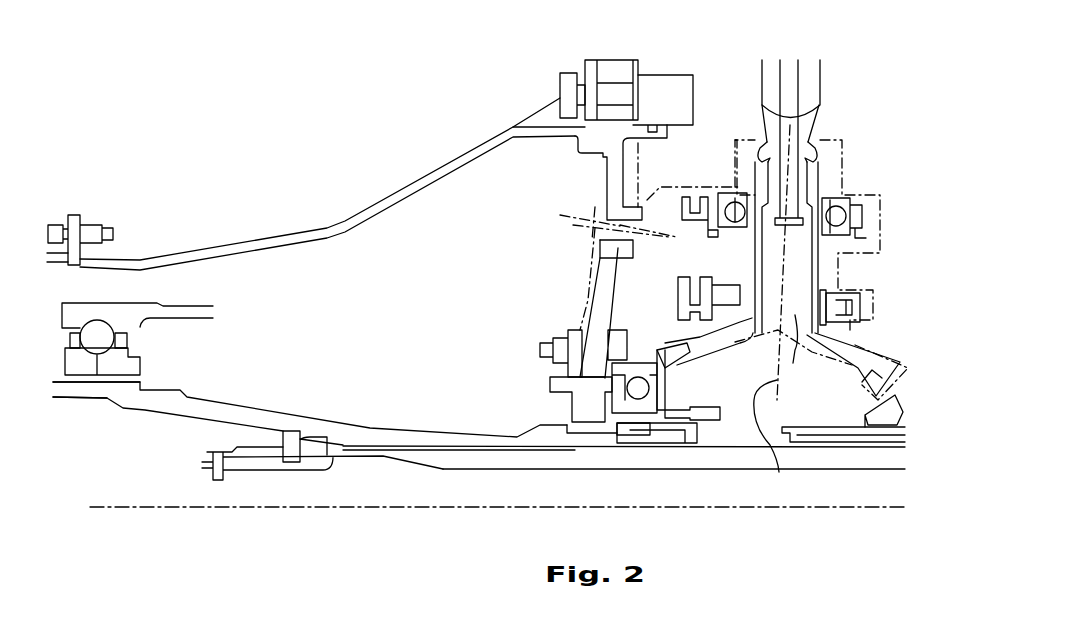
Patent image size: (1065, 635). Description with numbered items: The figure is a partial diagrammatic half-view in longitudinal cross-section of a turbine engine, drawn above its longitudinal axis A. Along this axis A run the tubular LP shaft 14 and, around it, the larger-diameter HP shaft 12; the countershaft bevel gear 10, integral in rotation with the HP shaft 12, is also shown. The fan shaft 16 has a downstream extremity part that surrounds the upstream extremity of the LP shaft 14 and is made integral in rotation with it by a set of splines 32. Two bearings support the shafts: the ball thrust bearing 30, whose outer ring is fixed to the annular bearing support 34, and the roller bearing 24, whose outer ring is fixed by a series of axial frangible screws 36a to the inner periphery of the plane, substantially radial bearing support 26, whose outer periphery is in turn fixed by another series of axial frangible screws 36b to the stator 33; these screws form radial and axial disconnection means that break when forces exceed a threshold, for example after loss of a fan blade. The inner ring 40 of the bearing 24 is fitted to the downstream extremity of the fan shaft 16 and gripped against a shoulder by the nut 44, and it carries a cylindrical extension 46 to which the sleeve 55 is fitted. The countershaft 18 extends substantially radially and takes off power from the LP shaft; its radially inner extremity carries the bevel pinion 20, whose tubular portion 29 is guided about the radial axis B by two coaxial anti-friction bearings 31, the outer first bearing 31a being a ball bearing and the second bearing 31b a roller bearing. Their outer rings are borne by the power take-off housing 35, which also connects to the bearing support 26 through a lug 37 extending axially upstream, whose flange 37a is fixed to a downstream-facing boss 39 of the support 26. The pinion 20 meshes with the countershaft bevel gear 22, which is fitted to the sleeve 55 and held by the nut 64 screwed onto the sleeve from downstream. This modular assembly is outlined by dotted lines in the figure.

The countershaft bevel gear 10 is at (866, 427).
The HP shaft 12 is at (812, 448).
The LP shaft 14 is at (732, 460).
The fan shaft 16 is at (367, 430).
The countershaft 18 is at (826, 88).
The bevel pinion 20 is at (865, 373).
The countershaft bevel gear 22 is at (650, 366).
The bearing 24 is at (532, 409).
The bearing support 26 is at (596, 277).
The cylindrical or tubular portion 29 is at (799, 351).
The bearing 30 is at (196, 354).
The anti-friction bearings 31 is at (840, 222).
The first bearing 31a is at (848, 198).
The second bearing 31b is at (852, 312).
The splines 32 is at (440, 456).
The stator 33 is at (683, 90).
The bearing support 34 is at (417, 185).
The power take-off housing 35 is at (680, 253).
The axial frangible screws 36a is at (540, 346).
The axial frangible screws 36b is at (560, 88).
The lug 37 is at (692, 298).
The flange 37a is at (643, 215).
The boss 39 is at (605, 248).
The inner ring 40 is at (593, 423).
The nut 44 is at (657, 436).
The cylindrical extension 46 is at (650, 424).
The sleeve 55 is at (710, 418).
The nut 64 is at (705, 410).
The longitudinal axis A is at (853, 507).
The radial axis B is at (779, 472).